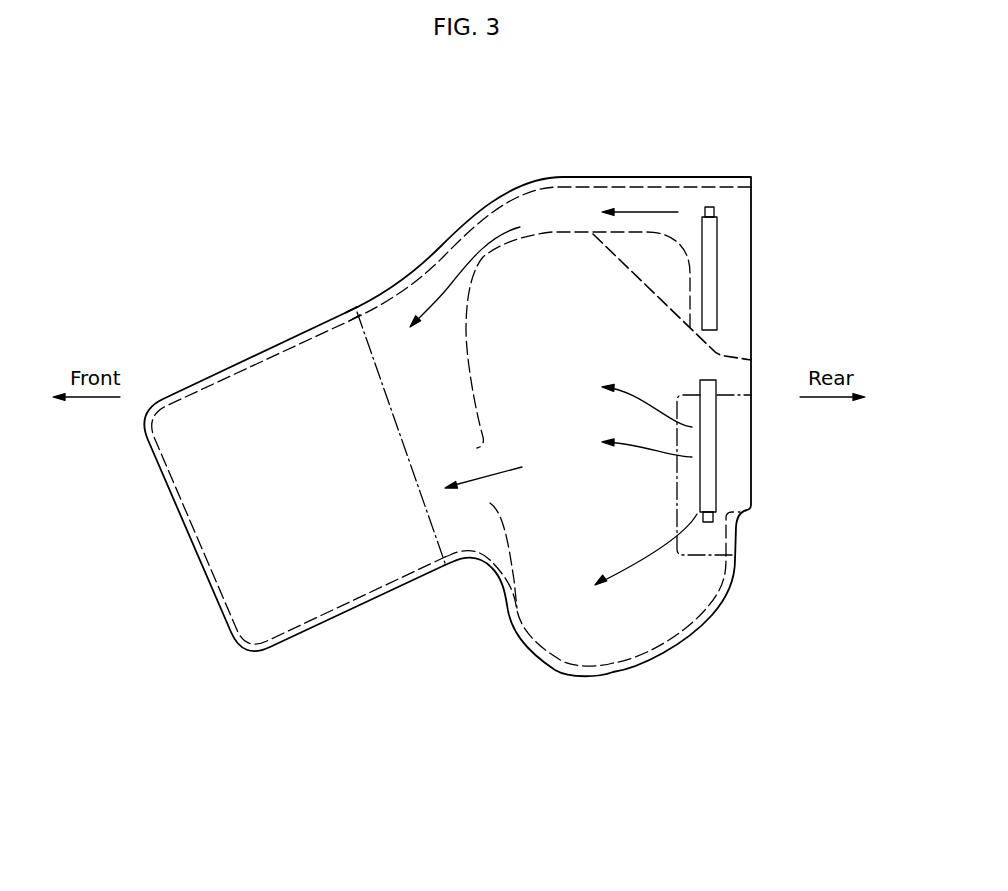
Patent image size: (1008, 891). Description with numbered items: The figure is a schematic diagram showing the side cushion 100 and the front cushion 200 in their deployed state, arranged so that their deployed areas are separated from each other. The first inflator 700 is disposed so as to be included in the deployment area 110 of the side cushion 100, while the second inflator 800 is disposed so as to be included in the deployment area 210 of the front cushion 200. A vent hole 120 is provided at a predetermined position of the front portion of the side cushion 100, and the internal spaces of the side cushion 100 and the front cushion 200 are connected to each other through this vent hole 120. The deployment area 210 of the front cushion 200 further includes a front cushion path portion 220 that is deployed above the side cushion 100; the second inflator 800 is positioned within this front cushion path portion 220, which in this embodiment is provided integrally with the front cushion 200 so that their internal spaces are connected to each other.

The side cushion 100 is at (557, 230).
The deployment area of the side cushion 110 is at (571, 507).
The vent hole 120 is at (487, 457).
The front cushion 200 is at (178, 392).
The deployment area of the front cushion 210 is at (272, 545).
The front cushion path portion 220 is at (582, 212).
The first inflator 700 is at (710, 458).
The second inflator 800 is at (708, 280).